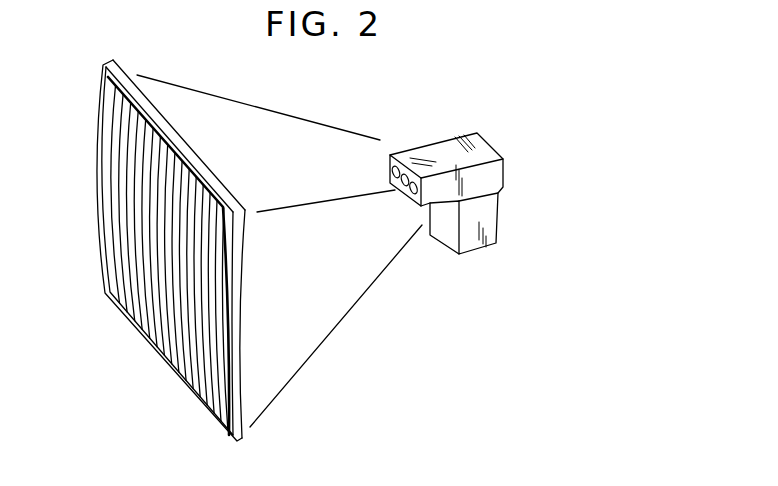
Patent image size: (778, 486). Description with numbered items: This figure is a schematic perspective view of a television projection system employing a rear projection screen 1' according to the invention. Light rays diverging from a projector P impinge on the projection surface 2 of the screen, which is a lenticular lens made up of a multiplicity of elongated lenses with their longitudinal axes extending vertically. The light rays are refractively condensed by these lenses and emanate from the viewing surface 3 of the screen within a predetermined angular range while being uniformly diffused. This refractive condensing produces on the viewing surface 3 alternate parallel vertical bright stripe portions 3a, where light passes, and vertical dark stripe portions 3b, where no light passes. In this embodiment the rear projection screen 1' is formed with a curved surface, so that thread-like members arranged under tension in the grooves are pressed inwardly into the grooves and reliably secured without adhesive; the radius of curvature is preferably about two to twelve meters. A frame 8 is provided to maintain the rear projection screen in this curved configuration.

The rear projection screen 1' is at (169, 250).
The projection surface 2 is at (203, 162).
The viewing surface 3 is at (115, 236).
The bright stripe portions 3a is at (175, 357).
The dark stripe portions 3b is at (157, 343).
The frame 8 is at (236, 292).
The projector P is at (445, 137).